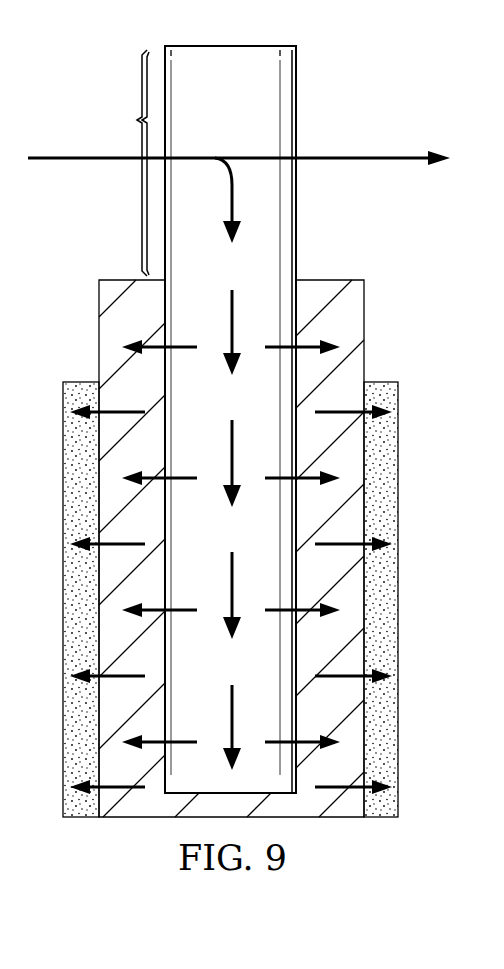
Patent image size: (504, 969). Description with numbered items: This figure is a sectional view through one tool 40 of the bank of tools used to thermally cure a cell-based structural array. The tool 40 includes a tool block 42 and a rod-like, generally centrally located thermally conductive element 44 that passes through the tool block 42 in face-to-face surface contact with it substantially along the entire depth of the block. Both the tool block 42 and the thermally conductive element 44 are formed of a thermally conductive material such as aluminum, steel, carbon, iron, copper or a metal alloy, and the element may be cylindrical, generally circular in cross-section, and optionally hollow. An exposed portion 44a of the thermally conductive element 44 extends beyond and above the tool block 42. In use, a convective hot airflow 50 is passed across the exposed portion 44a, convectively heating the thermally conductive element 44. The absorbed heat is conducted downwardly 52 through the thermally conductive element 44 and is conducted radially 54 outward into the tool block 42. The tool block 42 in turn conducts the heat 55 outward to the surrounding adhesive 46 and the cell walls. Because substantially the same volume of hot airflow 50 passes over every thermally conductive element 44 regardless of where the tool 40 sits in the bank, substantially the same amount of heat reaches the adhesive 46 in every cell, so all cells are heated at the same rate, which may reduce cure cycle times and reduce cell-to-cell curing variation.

The tool 40 is at (245, 431).
The tool block 42 is at (232, 548).
The thermally conductive element 44 is at (297, 103).
The exposed portion 44a is at (137, 120).
The adhesive 46 is at (63, 600).
The hot airflow 50 is at (378, 158).
The downward heat conduction 52 is at (229, 305).
The radial heat conduction 54 is at (310, 347).
The heat conducted to adhesive 55 is at (122, 415).